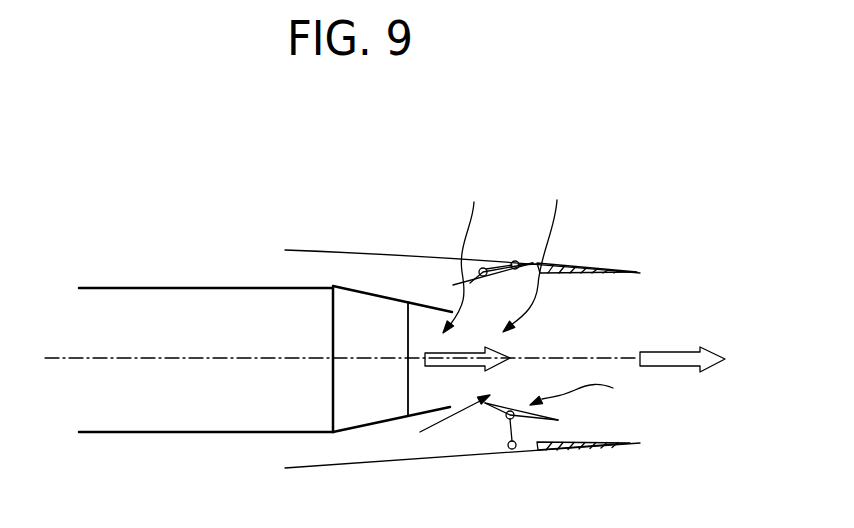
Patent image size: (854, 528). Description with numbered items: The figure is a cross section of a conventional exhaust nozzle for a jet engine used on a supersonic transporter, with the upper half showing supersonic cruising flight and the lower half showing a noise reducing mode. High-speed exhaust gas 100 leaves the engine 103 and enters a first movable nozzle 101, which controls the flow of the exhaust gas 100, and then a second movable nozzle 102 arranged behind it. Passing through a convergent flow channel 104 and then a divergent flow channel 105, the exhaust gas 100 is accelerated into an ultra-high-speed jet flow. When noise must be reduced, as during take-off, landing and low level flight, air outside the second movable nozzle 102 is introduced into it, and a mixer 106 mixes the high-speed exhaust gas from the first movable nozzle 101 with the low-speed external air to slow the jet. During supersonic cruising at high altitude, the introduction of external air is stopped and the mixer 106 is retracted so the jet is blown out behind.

The exhaust gas 100 is at (448, 366).
The first movable nozzle 101 is at (423, 303).
The second movable nozzle 102 is at (607, 266).
The engine 103 is at (175, 287).
The convergent flow channel 104 is at (471, 251).
The divergent flow channel 105 is at (538, 250).
The mixer 106 is at (595, 387).